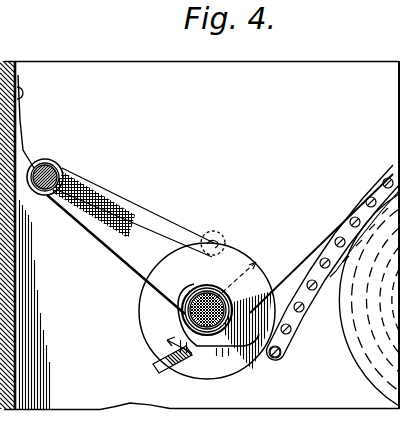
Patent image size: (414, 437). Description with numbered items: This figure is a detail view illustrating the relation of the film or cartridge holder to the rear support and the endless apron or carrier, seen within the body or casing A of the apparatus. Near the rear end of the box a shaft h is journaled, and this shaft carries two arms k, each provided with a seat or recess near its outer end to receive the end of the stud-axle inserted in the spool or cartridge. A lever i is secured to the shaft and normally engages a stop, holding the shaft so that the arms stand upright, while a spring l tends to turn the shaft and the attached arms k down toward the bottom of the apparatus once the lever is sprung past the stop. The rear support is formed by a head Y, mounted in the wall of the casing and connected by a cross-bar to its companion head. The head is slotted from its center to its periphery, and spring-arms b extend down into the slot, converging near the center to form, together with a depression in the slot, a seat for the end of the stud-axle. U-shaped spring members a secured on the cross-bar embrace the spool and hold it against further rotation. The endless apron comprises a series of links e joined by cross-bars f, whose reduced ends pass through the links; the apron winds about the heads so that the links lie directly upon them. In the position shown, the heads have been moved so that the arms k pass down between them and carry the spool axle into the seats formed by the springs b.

The body or casing A is at (216, 140).
The spring l is at (26, 128).
The shaft h is at (50, 171).
The arms k is at (129, 242).
The lever i is at (165, 203).
The U-shaped spring members a is at (182, 292).
The head y is at (151, 309).
The spring-arms b is at (304, 276).
The links e is at (300, 327).
The cross-bars f is at (282, 351).